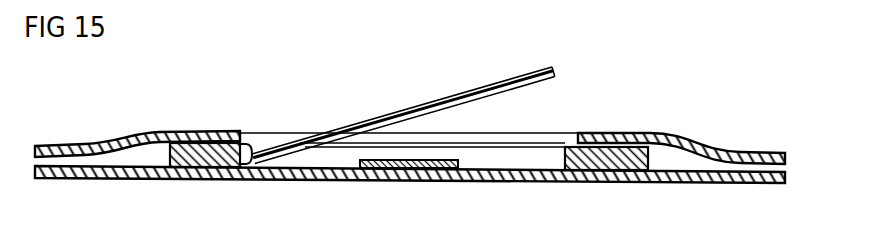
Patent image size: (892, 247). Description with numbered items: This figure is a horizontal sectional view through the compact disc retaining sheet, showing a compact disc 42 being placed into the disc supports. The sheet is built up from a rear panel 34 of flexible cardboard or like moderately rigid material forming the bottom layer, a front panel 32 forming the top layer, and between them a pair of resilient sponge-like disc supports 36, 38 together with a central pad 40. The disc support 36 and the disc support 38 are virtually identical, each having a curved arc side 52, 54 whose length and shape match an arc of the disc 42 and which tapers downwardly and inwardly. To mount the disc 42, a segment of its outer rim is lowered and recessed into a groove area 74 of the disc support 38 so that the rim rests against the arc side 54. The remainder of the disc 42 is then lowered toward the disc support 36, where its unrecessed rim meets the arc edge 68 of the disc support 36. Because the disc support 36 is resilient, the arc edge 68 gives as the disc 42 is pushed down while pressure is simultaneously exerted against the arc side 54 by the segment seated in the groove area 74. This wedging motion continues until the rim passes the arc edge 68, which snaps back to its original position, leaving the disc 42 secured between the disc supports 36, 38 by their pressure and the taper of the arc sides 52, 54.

The front panel 32 is at (741, 152).
The rear panel 34 is at (711, 184).
The disc support 36 is at (603, 172).
The disc support 38 is at (222, 168).
The central pad 40 is at (442, 160).
The compact disc 42 is at (443, 99).
The arc side 52 is at (567, 158).
The arc side 54 is at (250, 163).
The arc edge 68 is at (563, 145).
The groove area 74 is at (252, 163).